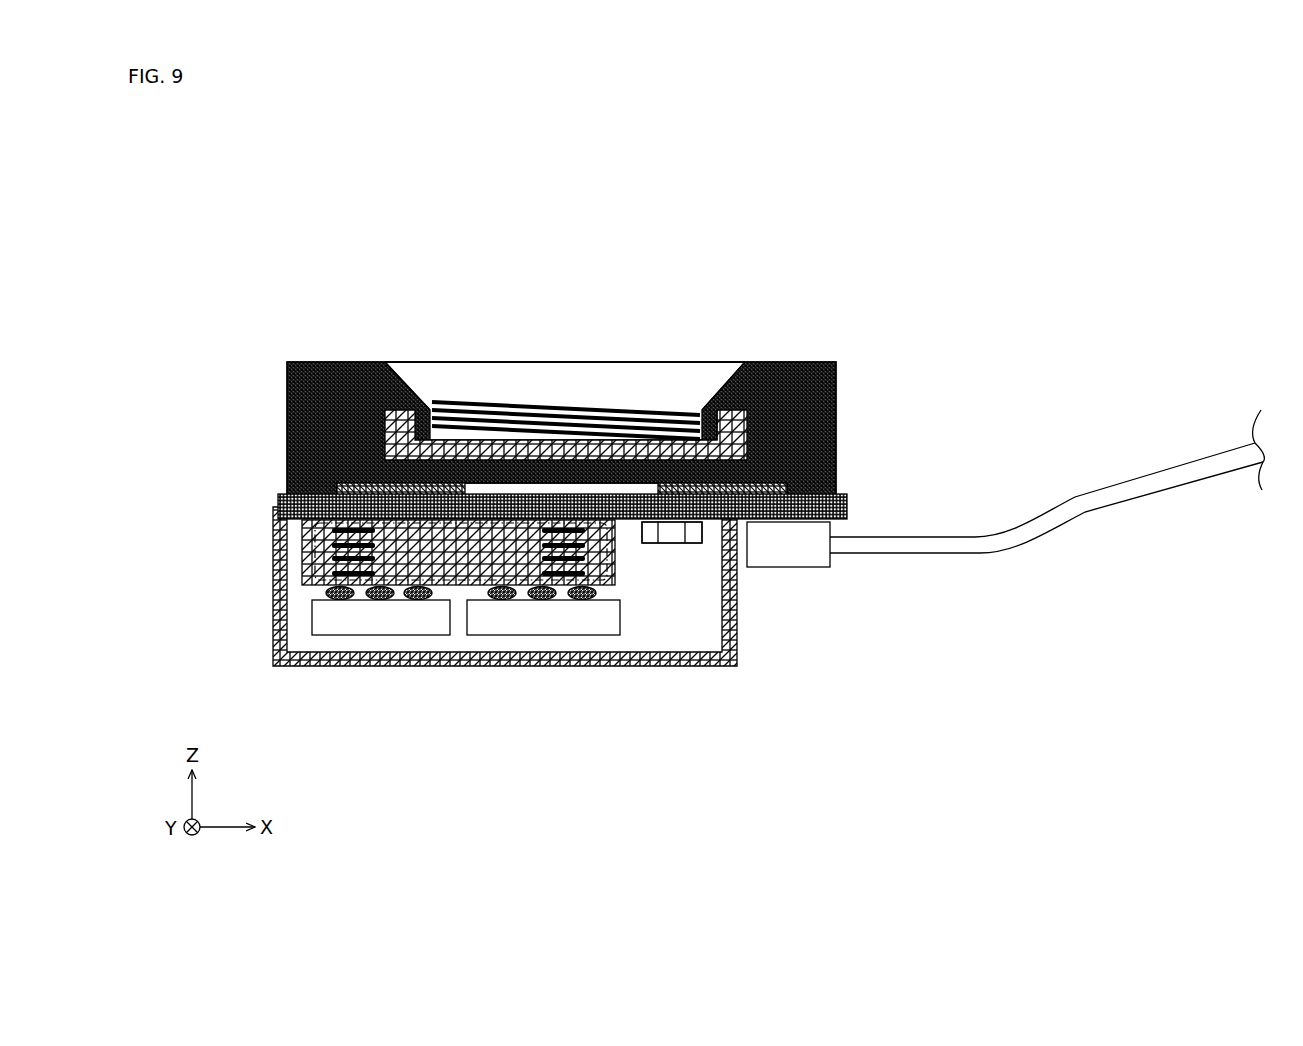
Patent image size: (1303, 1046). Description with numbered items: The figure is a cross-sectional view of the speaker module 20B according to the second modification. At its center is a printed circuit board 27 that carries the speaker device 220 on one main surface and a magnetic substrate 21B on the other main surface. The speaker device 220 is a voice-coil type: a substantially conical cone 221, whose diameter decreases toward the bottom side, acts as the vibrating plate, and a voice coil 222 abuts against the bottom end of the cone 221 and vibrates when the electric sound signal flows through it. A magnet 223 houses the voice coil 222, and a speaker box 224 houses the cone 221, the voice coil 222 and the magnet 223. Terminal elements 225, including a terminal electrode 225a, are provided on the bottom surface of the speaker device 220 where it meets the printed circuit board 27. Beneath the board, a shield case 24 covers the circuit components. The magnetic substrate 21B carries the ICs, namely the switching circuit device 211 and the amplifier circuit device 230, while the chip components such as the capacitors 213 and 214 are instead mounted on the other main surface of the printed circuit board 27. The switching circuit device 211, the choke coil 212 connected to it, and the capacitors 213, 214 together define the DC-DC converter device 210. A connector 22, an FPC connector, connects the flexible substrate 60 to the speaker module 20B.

The speaker module 20B is at (946, 248).
The speaker device 220 is at (813, 321).
The cone 221 is at (465, 377).
The voice coil 222 is at (562, 408).
The magnet 223 is at (730, 425).
The speaker box 224 is at (837, 408).
The terminal elements 225 is at (337, 488).
The terminal electrode 225a is at (787, 488).
The printed circuit board 27 is at (847, 507).
The magnetic substrate 21B is at (416, 620).
The shield case 24 is at (277, 655).
The amplifier circuit device 230 is at (362, 635).
The switching circuit device 211 is at (538, 635).
The choke coil 212 is at (606, 528).
The capacitor 213 is at (680, 543).
The capacitor 214 is at (672, 532).
The DC-DC converter device 210 is at (456, 643).
The connector 22 is at (790, 560).
The flexible substrate 60 is at (1080, 502).